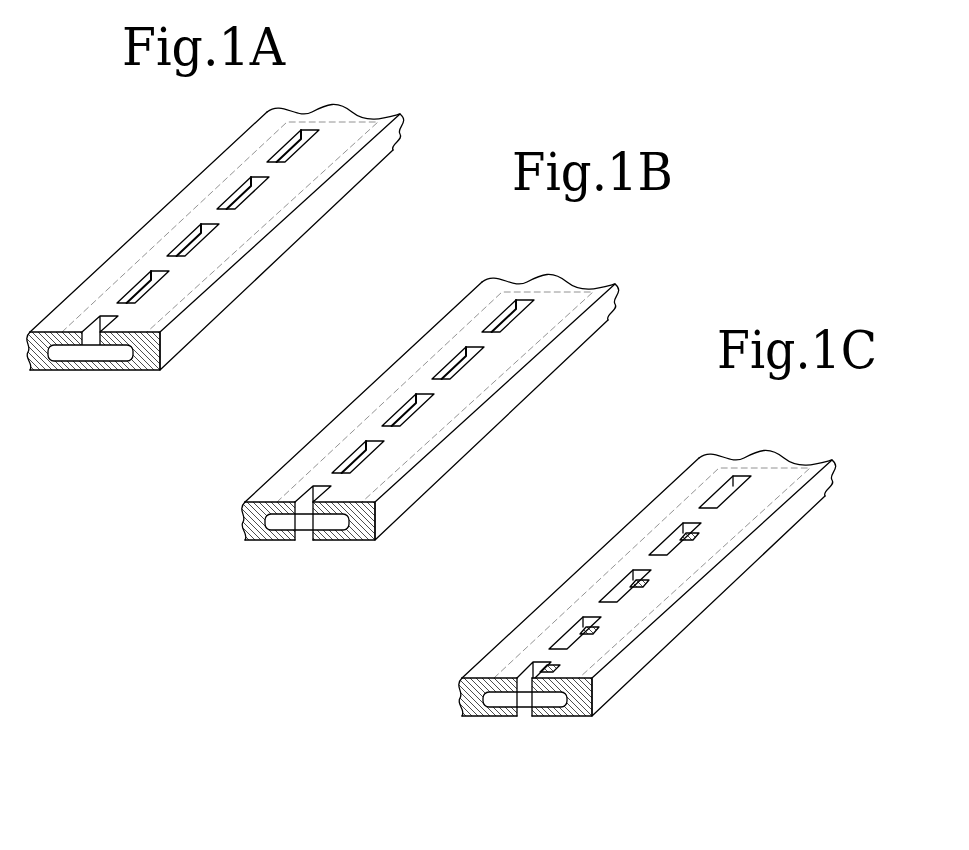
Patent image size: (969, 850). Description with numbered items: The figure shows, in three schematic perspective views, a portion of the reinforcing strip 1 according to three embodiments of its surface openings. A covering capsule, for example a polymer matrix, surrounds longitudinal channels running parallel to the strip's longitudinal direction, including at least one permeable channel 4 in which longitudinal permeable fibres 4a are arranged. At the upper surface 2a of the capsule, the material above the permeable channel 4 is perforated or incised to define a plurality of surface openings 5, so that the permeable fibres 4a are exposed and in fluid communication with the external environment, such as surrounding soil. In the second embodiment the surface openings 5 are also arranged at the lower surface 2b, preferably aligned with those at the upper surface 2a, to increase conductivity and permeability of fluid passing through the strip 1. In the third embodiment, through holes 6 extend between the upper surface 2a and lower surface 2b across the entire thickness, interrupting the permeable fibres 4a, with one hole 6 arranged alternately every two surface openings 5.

In FIG. 1A, the reinforcing strip 1 is at (80, 154).
In FIG. 1B, the reinforcing strip 1 is at (428, 399).
In FIG. 1C, the reinforcing strip 1 is at (645, 559).
In FIG. 1A, the upper surface 2a is at (198, 198).
In FIG. 1B, the upper surface 2a is at (430, 392).
In FIG. 1C, the upper surface 2a is at (647, 568).
In FIG. 1B, the lower surface 2b is at (258, 548).
In FIG. 1C, the lower surface 2b is at (471, 723).
In FIG. 1A, the permeable channel 4 is at (331, 134).
In FIG. 1B, the permeable channel 4 is at (430, 381).
In FIG. 1C, the permeable channel 4 is at (647, 558).
In FIG. 1A, the permeable fibres 4a is at (72, 350).
In FIG. 1B, the permeable fibres 4a is at (307, 562).
In FIG. 1C, the permeable fibres 4a is at (525, 737).
In FIG. 1A, the surface openings 5 is at (96, 308).
In FIG. 1B, the surface openings 5 is at (398, 401).
In FIG. 1C, the surface openings 5 is at (655, 520).
In FIG. 1C, the through holes 6 is at (685, 620).